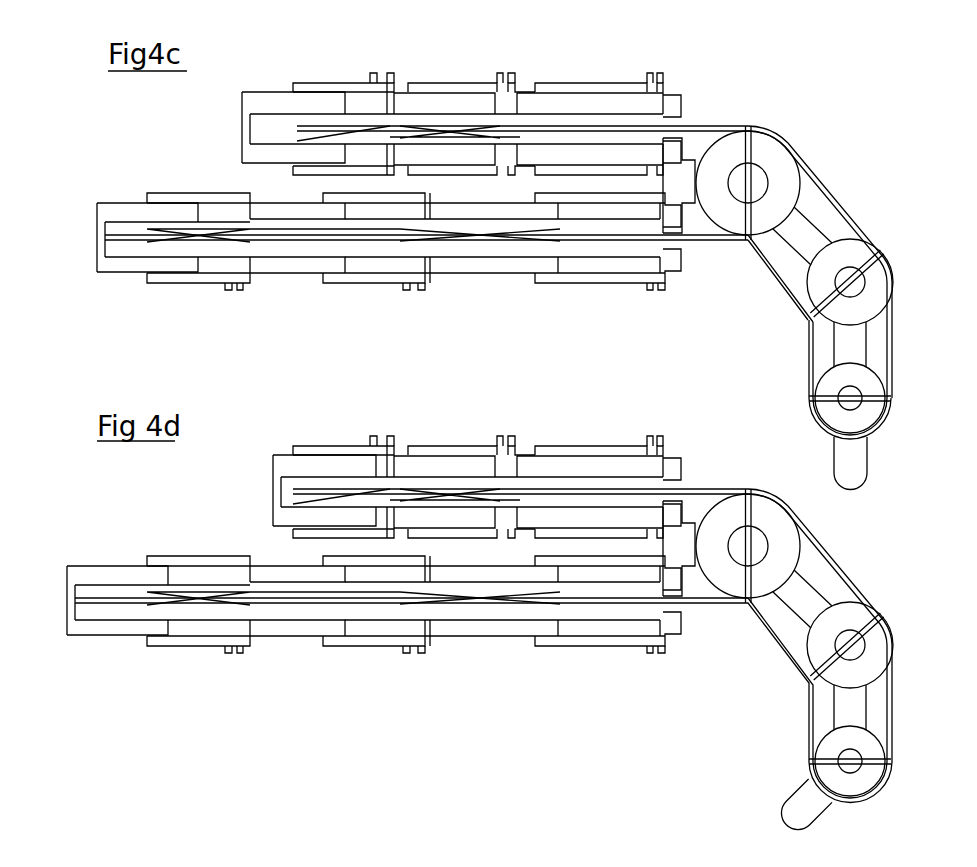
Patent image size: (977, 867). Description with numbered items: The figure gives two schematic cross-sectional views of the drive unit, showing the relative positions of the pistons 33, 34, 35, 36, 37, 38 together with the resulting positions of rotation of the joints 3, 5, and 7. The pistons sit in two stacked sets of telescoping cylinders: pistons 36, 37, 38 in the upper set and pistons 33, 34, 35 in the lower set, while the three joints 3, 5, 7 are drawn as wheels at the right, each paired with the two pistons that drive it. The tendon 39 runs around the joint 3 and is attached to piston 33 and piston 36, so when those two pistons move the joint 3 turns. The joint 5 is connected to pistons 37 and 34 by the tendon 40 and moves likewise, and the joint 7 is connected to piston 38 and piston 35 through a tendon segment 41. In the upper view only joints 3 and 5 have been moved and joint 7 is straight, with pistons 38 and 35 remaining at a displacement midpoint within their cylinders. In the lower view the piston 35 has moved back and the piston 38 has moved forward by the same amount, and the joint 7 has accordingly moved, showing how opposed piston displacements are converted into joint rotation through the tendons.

In FIG. 4C, the joint 3 is at (773, 148).
In FIG. 4D, the joint 3 is at (748, 531).
In FIG. 4C, the joint 5 is at (878, 287).
In FIG. 4D, the joint 5 is at (874, 645).
In FIG. 4C, the joint 7 is at (873, 410).
In FIG. 4D, the joint 7 is at (855, 778).
In FIG. 4C, the piston 33 is at (473, 273).
In FIG. 4D, the piston 33 is at (502, 622).
In FIG. 4C, the piston 34 is at (290, 273).
In FIG. 4D, the piston 34 is at (273, 625).
In FIG. 4C, the piston 35 is at (118, 273).
In FIG. 4D, the piston 35 is at (158, 628).
In FIG. 4C, the piston 36 is at (533, 92).
In FIG. 4D, the piston 36 is at (534, 475).
In FIG. 4C, the piston 37 is at (405, 92).
In FIG. 4D, the piston 37 is at (462, 475).
In FIG. 4C, the piston 38 is at (247, 92).
In FIG. 4D, the piston 38 is at (333, 475).
In FIG. 4C, the tendon 39 is at (715, 242).
In FIG. 4C, the tendon 40 is at (788, 290).
In FIG. 4C, the belt segment between second and third pulleys 41 is at (810, 367).